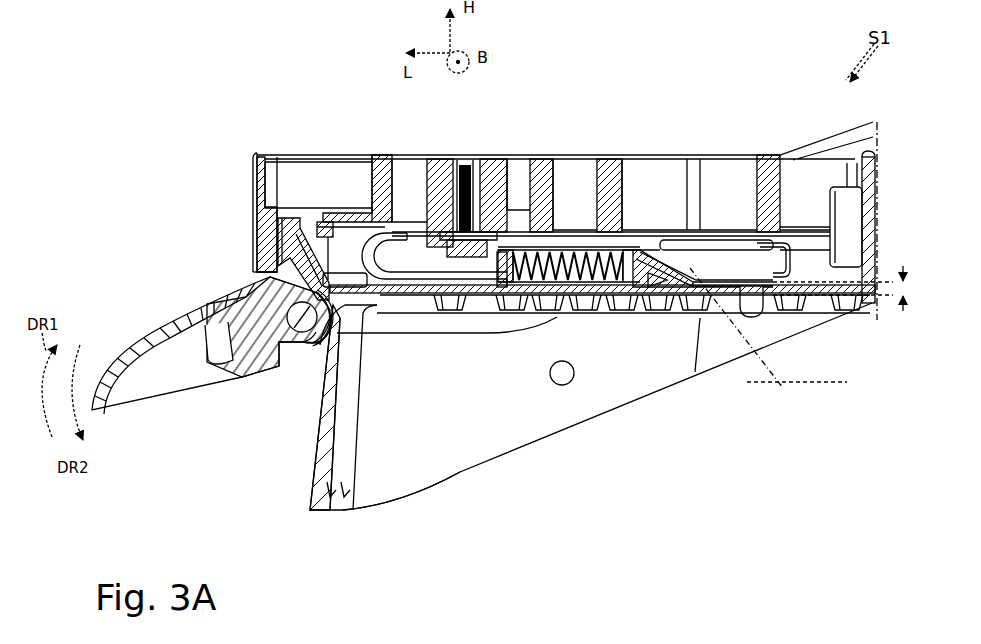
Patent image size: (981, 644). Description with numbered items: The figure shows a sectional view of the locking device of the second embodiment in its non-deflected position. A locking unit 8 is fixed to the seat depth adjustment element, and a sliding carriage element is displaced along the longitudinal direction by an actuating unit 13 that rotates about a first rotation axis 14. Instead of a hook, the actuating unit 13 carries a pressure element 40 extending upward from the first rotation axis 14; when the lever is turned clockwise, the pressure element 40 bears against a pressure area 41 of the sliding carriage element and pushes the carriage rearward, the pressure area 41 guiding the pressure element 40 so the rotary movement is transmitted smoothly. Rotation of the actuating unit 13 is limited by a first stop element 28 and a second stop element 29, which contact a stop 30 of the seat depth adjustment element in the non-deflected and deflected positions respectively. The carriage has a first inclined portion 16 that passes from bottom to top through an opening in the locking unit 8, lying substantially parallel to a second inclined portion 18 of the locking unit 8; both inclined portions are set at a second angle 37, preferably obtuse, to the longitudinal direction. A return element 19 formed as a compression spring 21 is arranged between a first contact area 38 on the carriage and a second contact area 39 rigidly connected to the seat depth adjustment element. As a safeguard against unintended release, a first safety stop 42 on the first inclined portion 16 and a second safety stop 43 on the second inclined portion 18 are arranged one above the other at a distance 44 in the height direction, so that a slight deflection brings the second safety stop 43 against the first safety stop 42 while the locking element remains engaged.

The locking unit 8 is at (375, 155).
The actuating unit 13 is at (173, 330).
The first rotation axis 14 is at (307, 343).
The first inclined portion 16 is at (652, 282).
The second inclined portion 18 is at (683, 277).
The return element 19 is at (573, 250).
The compression spring 21 is at (568, 266).
The first stop element 28 is at (262, 252).
The second stop element 29 is at (247, 287).
The stop 30 is at (258, 268).
The second angle 37 is at (800, 382).
The first contact area 38 is at (497, 255).
The second contact area 39 is at (642, 285).
The pressure element 40 is at (285, 232).
The pressure area 41 is at (290, 227).
The first safety stop 42 is at (733, 287).
The second safety stop 43 is at (693, 287).
The distance 44 is at (903, 266).